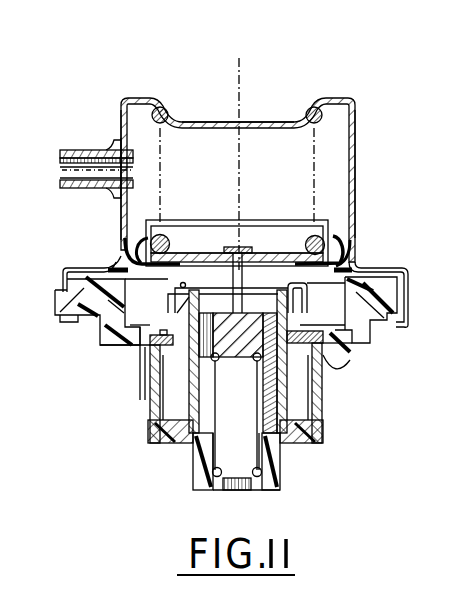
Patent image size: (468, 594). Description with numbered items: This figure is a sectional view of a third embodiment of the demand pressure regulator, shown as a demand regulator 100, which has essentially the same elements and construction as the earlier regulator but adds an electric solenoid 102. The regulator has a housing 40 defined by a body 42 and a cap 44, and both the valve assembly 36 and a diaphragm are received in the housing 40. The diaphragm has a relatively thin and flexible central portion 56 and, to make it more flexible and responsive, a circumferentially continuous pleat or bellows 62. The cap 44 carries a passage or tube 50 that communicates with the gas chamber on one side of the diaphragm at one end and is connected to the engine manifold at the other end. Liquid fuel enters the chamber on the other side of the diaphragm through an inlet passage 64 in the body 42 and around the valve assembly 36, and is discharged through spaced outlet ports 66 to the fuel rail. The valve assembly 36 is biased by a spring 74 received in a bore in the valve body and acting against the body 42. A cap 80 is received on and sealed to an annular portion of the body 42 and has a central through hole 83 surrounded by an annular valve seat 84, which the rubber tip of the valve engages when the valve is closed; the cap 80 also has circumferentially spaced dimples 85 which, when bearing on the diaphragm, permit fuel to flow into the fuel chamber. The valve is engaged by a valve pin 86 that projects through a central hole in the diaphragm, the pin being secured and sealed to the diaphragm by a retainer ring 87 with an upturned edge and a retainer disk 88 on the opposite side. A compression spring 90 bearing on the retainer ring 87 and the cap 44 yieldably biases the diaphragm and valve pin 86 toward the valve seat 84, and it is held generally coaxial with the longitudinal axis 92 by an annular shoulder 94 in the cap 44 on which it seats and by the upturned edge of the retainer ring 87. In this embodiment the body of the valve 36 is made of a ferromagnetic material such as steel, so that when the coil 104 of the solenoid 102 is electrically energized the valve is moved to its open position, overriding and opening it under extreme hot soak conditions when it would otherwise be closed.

The demand regulator 100 is at (258, 144).
The compression spring 90 is at (165, 104).
The cap 44 is at (121, 118).
The pleat or bellows 62 is at (350, 222).
The annular shoulder 94 is at (257, 130).
The longitudinal axis 92 is at (239, 75).
The passage or tube 50 is at (77, 188).
The annular valve seat 84 is at (237, 233).
The central portion 56 is at (277, 257).
The retainer ring 87 is at (163, 235).
The retainer disk 88 is at (128, 262).
The valve pin 86 is at (237, 236).
The central through hole 83 is at (252, 247).
The housing 40 is at (58, 329).
The valve assembly 36 is at (356, 266).
The cap 80 is at (206, 298).
The dimples 85 is at (317, 301).
The body 42 is at (145, 345).
The outlet ports 66 is at (147, 343).
The coil 104 is at (157, 425).
The electric solenoid 102 is at (298, 397).
The inlet passage 64 is at (234, 476).
The spring 74 is at (265, 490).